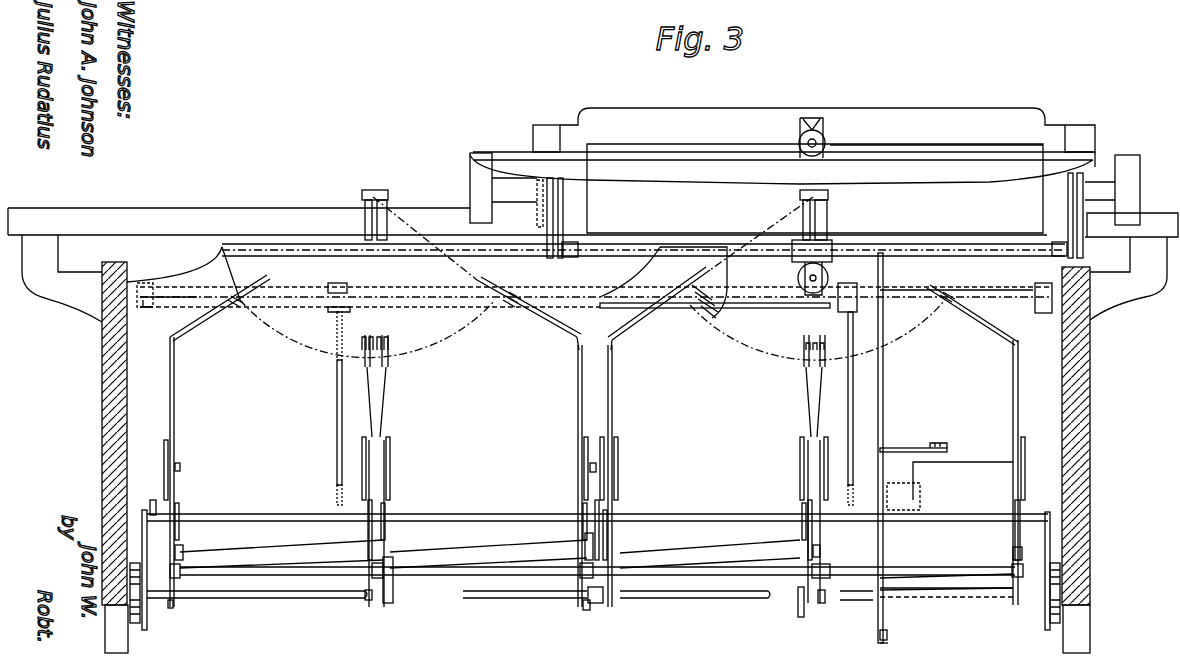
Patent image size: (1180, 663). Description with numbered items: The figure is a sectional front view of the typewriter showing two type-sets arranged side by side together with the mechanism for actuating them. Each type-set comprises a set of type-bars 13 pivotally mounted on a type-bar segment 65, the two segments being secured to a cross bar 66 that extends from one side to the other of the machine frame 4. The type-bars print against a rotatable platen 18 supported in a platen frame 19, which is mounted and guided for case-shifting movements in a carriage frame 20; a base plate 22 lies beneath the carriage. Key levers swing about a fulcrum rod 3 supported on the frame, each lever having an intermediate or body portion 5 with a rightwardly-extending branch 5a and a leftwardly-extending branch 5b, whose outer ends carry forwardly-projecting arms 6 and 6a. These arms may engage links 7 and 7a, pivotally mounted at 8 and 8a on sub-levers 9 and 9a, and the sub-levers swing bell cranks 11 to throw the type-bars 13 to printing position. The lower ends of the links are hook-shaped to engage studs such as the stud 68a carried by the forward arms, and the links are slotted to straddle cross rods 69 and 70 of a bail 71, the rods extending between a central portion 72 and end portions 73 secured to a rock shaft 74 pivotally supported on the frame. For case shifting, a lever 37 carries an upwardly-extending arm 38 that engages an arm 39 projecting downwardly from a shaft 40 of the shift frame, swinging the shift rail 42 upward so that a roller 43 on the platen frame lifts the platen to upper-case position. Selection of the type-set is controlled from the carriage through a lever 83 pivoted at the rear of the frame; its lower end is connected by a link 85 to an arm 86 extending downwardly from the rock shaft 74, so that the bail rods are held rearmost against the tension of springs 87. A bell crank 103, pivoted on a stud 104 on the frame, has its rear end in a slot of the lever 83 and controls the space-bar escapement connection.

The fulcrum rod 3 is at (333, 576).
The machine frame 4 is at (102, 433).
The intermediate or body portion 5 is at (384, 606).
The rightwardly-extending branch 5a is at (465, 598).
The leftwardly-extending branch 5b is at (258, 548).
The forwardly-projecting arm 6 is at (594, 552).
The forwardly-projecting arm 6a is at (171, 608).
The link 7 is at (367, 527).
The link 7a is at (177, 509).
The pivot 8 is at (598, 464).
The pivot 8a is at (181, 466).
The sub-lever 9 is at (366, 457).
The sub-lever 9a is at (166, 460).
The bell crank 11 is at (175, 400).
The type-bar 13 is at (229, 305).
The platen 18 is at (658, 147).
The platen frame 19 is at (557, 126).
The carriage frame 20 is at (510, 153).
The base plate 22 is at (126, 210).
The lever 37 is at (337, 496).
The upwardly-extending arm 38 is at (337, 438).
The arm 39 is at (336, 316).
The shaft 40 is at (397, 285).
The shift rail 42 is at (792, 306).
The roller 43 is at (797, 279).
The type-bar segment 65 is at (246, 246).
The cross bar 66 is at (598, 305).
The stud 68a is at (181, 548).
The cross rod 69 is at (716, 514).
The cross rod 70 is at (475, 514).
The bail 71 is at (150, 503).
The central portion 72 is at (607, 535).
The end portion 73 is at (147, 552).
The rock shaft 74 is at (752, 600).
The lever 83 is at (882, 379).
The link 85 is at (885, 643).
The arm 86 is at (879, 631).
The spring 87 is at (130, 613).
The bell crank 103 is at (905, 448).
The stud 104 is at (940, 445).